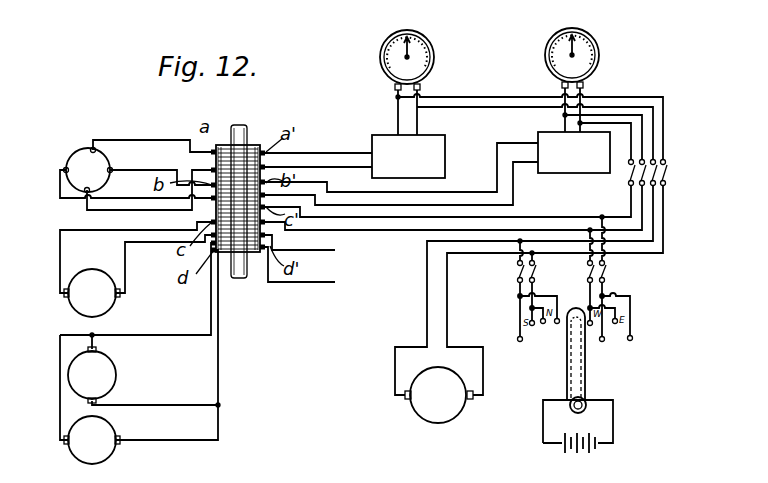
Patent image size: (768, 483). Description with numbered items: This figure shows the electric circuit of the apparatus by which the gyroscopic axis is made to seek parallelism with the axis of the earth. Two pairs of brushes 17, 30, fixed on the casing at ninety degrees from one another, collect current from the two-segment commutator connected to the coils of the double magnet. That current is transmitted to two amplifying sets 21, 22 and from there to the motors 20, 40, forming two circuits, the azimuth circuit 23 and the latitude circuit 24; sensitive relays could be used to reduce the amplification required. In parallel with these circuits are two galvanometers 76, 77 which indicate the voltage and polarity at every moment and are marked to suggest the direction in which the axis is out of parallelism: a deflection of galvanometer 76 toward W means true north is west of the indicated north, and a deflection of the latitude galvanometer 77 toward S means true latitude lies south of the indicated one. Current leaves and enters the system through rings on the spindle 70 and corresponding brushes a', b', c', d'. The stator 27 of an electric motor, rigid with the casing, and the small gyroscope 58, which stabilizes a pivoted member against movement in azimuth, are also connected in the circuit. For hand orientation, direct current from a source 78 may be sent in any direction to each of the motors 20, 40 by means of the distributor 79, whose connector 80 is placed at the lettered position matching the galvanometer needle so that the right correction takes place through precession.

The pair of brushes 17 is at (67, 166).
The pair of brushes 30 is at (93, 148).
The spindle 70 is at (245, 128).
The azimuth circuit 23 is at (332, 150).
The latitude circuit 24 is at (611, 108).
The amplifying set 21 is at (447, 143).
The amplifying set 22 is at (545, 131).
The galvanometer 76 is at (418, 40).
The latitude galvanometer 77 is at (588, 40).
The motor 20 is at (435, 422).
The motor 40 is at (117, 305).
The stator of an electric motor 27 is at (117, 379).
The small gyroscope 58 is at (84, 455).
The connector of the distributor 80 is at (577, 310).
The distributor 79 is at (588, 397).
The source of direct current 78 is at (561, 450).